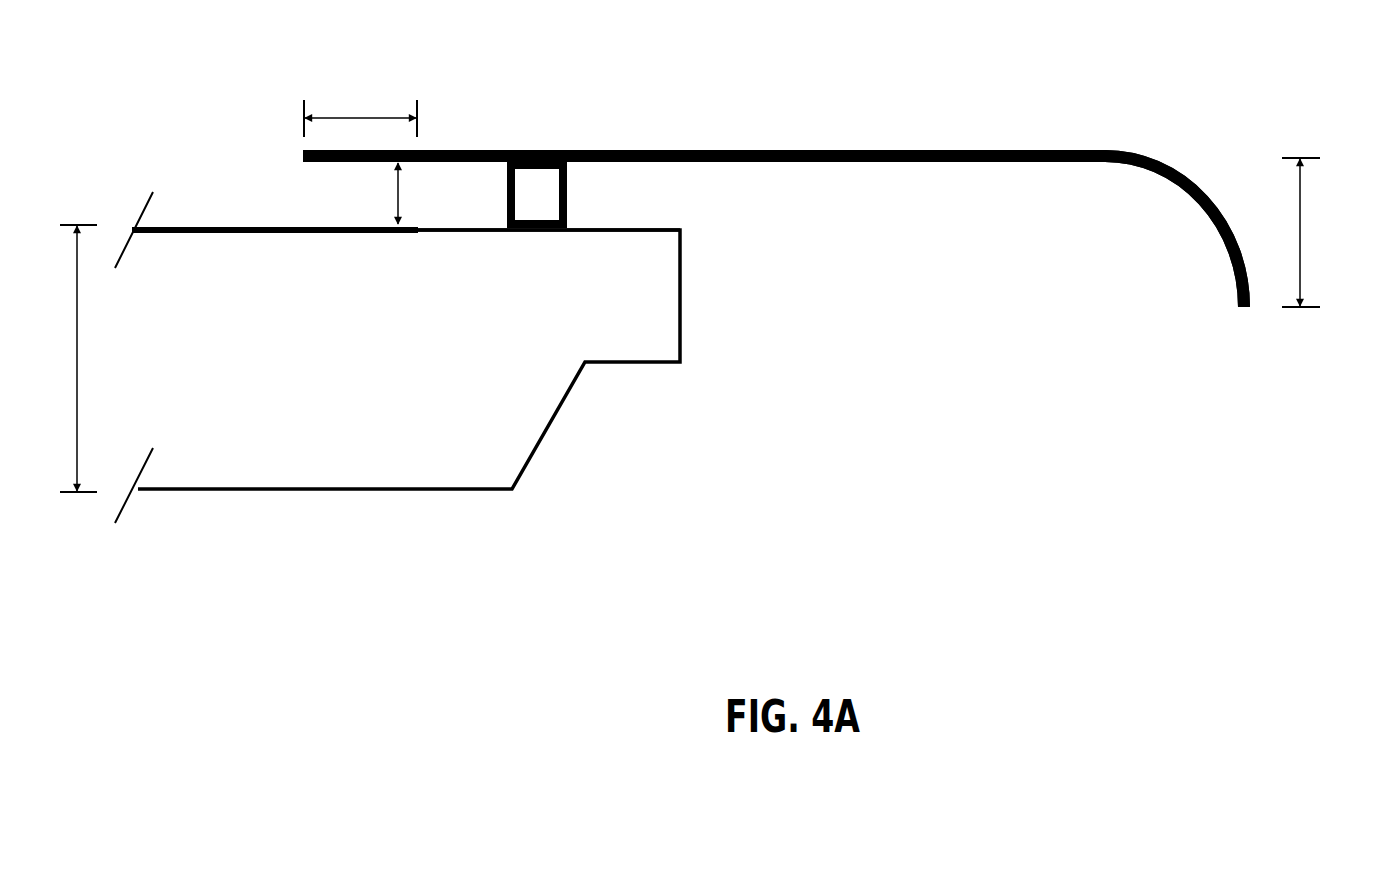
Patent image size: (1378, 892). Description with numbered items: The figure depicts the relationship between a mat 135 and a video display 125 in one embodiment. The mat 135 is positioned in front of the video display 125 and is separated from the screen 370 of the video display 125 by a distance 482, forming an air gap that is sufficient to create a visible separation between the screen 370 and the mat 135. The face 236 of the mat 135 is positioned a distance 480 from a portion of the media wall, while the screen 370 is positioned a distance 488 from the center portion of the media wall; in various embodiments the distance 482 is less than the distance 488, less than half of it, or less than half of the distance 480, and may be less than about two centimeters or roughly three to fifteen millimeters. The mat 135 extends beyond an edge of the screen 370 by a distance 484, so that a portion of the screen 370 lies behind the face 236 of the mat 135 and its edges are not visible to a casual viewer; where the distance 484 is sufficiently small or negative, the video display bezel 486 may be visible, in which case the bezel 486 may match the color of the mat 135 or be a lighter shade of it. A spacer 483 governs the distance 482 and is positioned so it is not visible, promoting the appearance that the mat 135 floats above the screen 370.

The video display 125 is at (418, 411).
The mat 135 is at (998, 162).
The face of the mat 236 is at (757, 150).
The screen 370 is at (227, 232).
The distance 480 is at (1302, 212).
The distance 482 is at (400, 189).
The spacer 483 is at (567, 190).
The distance 484 is at (340, 120).
The video display bezel 486 is at (623, 225).
The distance 488 is at (80, 418).